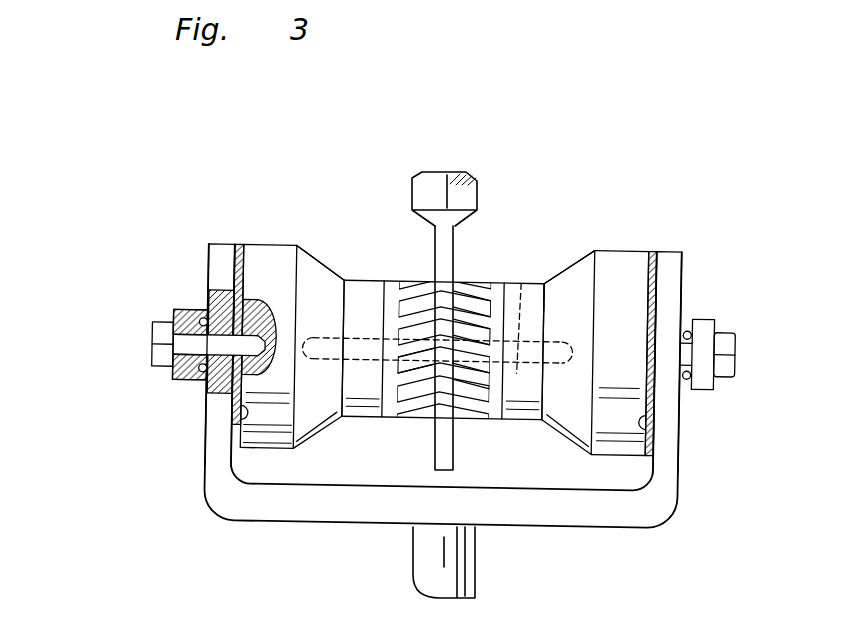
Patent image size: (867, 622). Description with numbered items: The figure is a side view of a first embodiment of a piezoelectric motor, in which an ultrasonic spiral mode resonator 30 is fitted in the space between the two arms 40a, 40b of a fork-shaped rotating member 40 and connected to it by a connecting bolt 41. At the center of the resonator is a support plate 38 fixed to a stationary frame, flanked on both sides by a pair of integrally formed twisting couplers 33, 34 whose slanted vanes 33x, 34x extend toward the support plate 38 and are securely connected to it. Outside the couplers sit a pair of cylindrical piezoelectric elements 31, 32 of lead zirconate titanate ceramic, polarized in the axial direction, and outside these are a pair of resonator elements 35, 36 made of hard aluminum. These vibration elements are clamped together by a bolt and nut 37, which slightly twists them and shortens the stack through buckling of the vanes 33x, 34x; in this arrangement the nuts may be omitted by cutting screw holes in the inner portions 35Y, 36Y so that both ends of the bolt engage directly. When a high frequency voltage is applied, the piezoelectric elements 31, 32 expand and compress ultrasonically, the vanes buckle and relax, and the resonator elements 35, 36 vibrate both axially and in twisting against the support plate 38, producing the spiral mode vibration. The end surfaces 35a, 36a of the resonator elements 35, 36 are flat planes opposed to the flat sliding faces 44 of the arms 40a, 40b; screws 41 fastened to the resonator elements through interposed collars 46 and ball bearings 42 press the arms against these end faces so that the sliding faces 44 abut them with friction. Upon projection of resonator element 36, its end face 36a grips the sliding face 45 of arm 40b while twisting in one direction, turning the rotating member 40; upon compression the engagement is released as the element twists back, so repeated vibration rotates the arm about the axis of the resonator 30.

The ultrasonic spiral mode resonator 30 is at (315, 252).
The piezoelectric element 31 is at (533, 282).
The piezoelectric element 32 is at (358, 285).
The twisting coupler 33 is at (478, 288).
The vane 33x is at (470, 408).
The twisting coupler 34 is at (410, 292).
The vane 34x is at (420, 380).
The resonator element 35 is at (617, 268).
The inner portion 35Y is at (545, 300).
The end surface 35a is at (650, 425).
The resonator element 36 is at (265, 250).
The inner portion 36Y is at (332, 288).
The end surface 36a is at (248, 412).
The bolt and nut 37 is at (520, 282).
The support plate 38 is at (457, 237).
The rotating member 40 is at (268, 497).
The arm 40a is at (677, 257).
The arm 40b is at (220, 265).
The connecting bolt 41 is at (150, 345).
The ball bearing 42 is at (176, 312).
The sliding face 44 is at (650, 252).
The sliding face 45 is at (237, 247).
The collar 46 is at (198, 320).